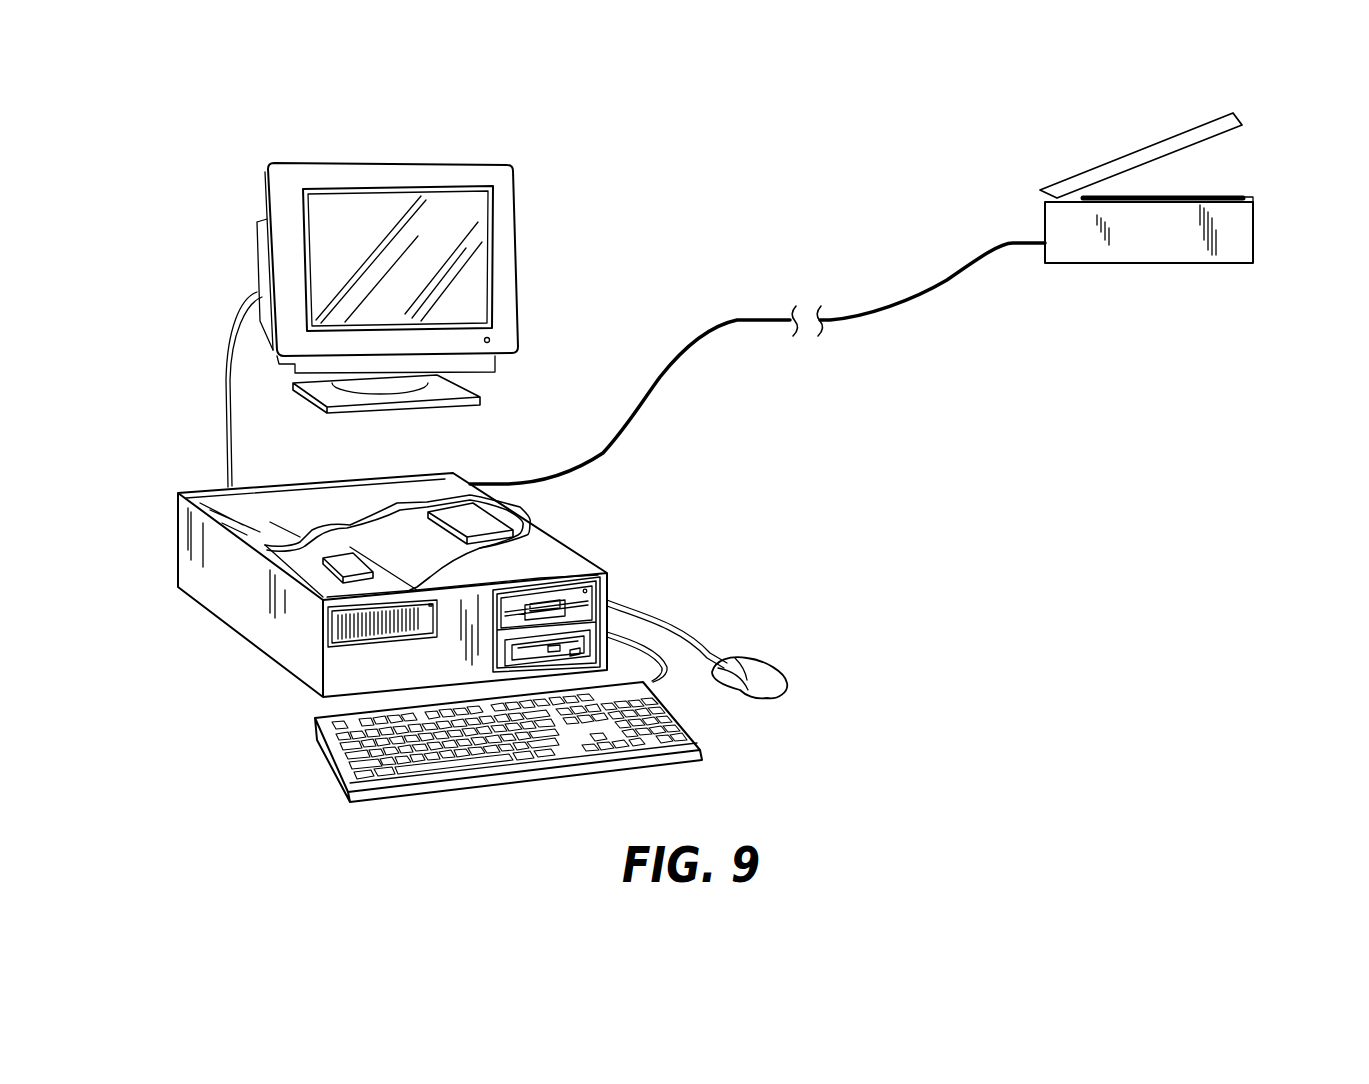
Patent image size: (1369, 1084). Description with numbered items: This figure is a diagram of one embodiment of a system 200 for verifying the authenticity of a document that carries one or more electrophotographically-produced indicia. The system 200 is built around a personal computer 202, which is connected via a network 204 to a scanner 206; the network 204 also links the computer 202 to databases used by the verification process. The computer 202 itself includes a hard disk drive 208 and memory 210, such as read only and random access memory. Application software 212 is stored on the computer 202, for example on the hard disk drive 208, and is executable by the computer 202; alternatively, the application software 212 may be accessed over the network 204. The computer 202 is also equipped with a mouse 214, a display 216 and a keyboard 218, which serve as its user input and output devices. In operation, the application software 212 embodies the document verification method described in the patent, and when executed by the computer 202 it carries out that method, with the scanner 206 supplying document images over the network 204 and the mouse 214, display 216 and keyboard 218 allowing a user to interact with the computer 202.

The system 200 is at (140, 368).
The personal computer 202 is at (210, 615).
The network 204 is at (908, 318).
The scanner 206 is at (1255, 218).
The hard disk drive 208 is at (310, 567).
The memory 210 is at (480, 523).
The application software 212 is at (342, 555).
The mouse 214 is at (773, 667).
The display 216 is at (517, 237).
The keyboard 218 is at (690, 725).